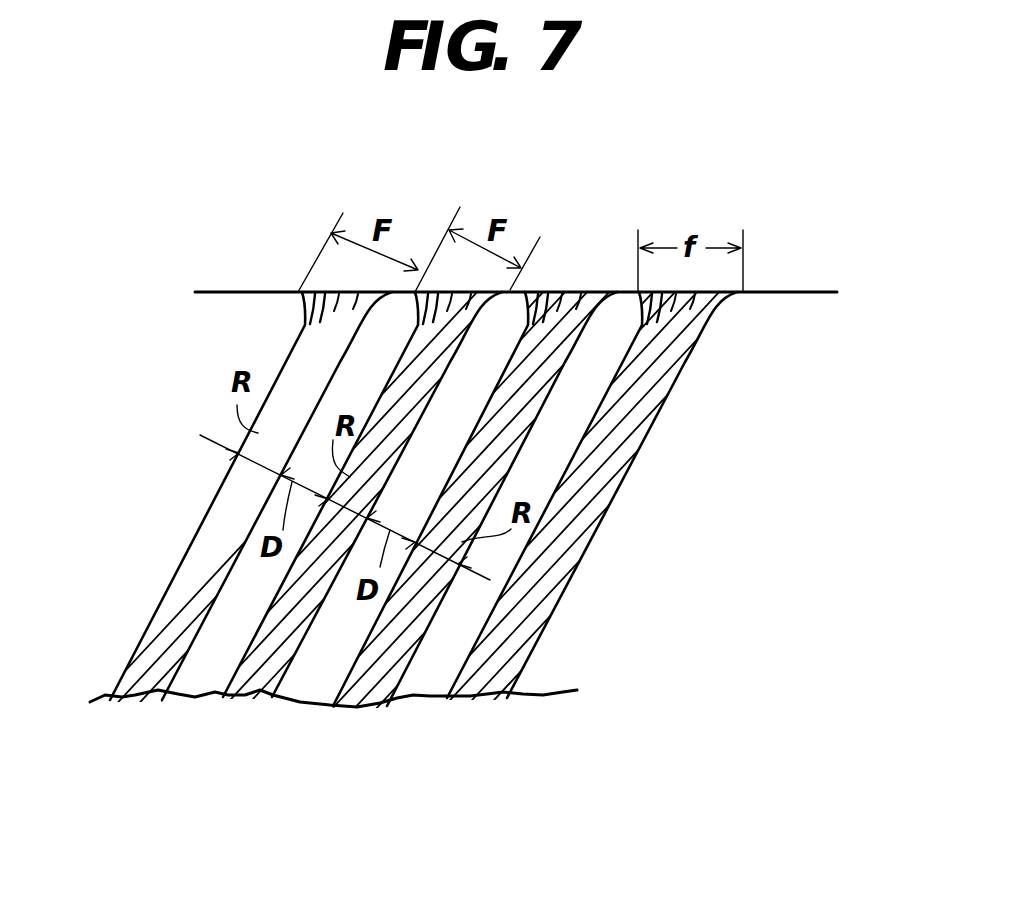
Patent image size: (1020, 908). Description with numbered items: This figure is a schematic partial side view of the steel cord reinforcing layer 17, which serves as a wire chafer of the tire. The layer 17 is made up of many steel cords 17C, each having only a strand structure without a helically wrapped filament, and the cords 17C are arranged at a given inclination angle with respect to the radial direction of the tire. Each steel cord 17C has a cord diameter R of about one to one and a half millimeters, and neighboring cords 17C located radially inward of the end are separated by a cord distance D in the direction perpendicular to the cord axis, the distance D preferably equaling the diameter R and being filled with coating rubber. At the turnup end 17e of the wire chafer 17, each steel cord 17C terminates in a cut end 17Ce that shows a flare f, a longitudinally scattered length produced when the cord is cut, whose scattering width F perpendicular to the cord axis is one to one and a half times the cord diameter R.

The steel cord reinforcing layer 17 is at (666, 519).
The steel cord 17C is at (187, 594).
The cut end 17Ce is at (328, 292).
The turnup end 17e is at (788, 292).